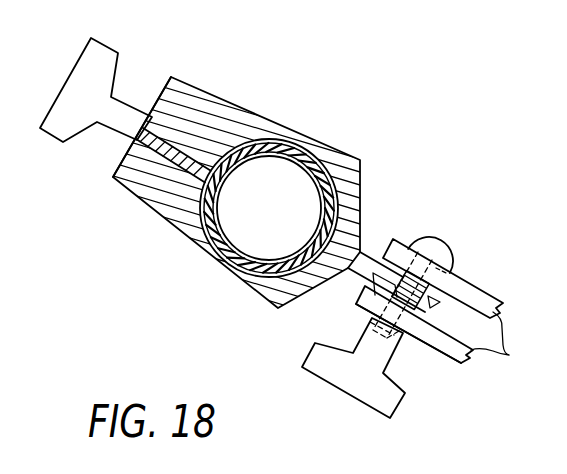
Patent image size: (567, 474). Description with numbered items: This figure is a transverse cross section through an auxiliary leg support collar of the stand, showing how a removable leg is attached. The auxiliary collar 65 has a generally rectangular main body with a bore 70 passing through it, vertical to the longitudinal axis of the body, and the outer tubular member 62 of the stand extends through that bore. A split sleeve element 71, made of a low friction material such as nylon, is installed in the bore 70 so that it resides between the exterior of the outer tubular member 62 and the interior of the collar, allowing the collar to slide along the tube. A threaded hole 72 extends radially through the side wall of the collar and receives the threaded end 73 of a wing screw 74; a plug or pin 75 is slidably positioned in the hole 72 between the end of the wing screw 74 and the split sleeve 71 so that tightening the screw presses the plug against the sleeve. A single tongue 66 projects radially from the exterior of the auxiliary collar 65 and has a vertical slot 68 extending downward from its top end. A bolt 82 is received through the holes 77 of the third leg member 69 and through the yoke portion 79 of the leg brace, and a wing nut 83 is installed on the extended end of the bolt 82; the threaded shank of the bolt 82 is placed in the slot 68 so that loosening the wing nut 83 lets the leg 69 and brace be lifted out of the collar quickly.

The outer tubular member 62 is at (259, 158).
The auxiliary collar 65 is at (347, 125).
The tongue 66 is at (365, 262).
The vertical slot 68 is at (436, 307).
The leg member 69 is at (446, 305).
The bore 70 is at (254, 140).
The split sleeve element 71 is at (243, 275).
The threaded hole 72 is at (180, 151).
The threaded end 73 is at (137, 138).
The wing screw 74 is at (98, 62).
The plug or pin 75 is at (155, 198).
The holes 77 is at (449, 269).
The yoke portion 79 is at (432, 358).
The bolt 82 is at (431, 250).
The wing nut 83 is at (355, 378).